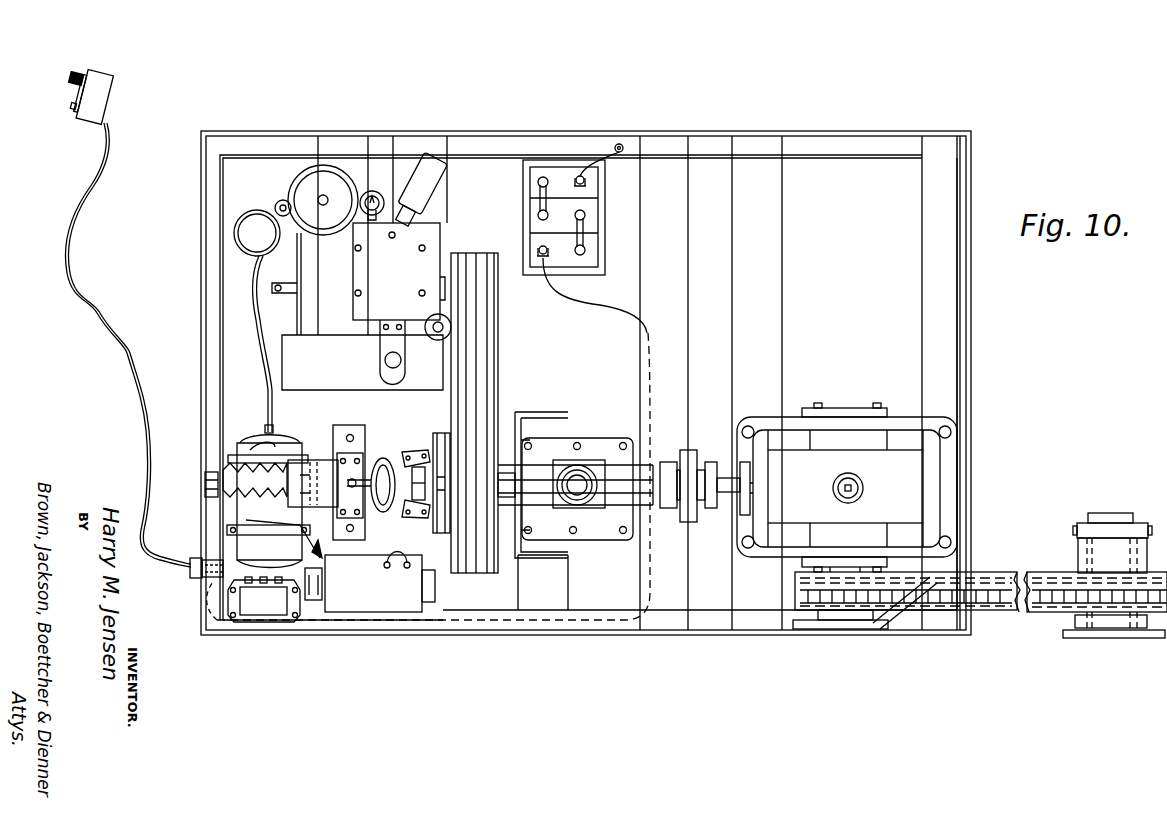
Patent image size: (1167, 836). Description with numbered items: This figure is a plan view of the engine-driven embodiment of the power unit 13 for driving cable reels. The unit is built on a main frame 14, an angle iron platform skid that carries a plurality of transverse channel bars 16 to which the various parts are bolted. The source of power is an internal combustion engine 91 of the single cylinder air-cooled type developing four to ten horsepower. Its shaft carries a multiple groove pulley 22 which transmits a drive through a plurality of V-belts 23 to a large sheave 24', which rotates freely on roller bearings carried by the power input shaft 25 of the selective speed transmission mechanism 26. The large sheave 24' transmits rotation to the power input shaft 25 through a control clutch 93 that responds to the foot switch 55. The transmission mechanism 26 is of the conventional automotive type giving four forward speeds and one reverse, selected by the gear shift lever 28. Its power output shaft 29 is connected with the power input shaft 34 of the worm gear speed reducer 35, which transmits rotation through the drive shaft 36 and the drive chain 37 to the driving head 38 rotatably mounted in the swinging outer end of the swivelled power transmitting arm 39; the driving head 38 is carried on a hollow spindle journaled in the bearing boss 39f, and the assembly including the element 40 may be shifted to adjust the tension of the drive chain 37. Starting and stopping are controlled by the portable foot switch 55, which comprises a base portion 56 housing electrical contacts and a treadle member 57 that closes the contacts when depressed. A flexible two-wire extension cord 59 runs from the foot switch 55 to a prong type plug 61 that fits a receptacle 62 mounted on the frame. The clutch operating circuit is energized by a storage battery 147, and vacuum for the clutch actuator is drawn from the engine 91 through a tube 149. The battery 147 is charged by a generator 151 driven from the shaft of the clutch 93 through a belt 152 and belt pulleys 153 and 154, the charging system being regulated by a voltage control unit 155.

The power unit 13 is at (299, 120).
The main frame 14 is at (500, 143).
The transverse channel bars 16 is at (407, 142).
The multiple groove pulley 22 is at (504, 413).
The V-belts 23 is at (470, 365).
The large sheave 24' is at (500, 466).
The power input shaft 25 is at (502, 468).
The selective speed transmission mechanism 26 is at (575, 478).
The gear shift lever 28 is at (578, 495).
The power output shaft 29 is at (661, 468).
The power input shaft 34 is at (727, 490).
The worm gear speed reducer 35 is at (835, 460).
The drive shaft 36 is at (906, 601).
The drive chain 37 is at (993, 608).
The driving head 38 is at (1095, 638).
The power transmitting arm 39 is at (1032, 573).
The bearing boss 39f is at (1080, 552).
The driving head assembly element 40 is at (1105, 575).
The foot switch 55 is at (97, 79).
The base portion 56 is at (97, 90).
The treadle member 57 is at (75, 98).
The extension cord 59 is at (112, 320).
The plug 61 is at (193, 577).
The receptacle 62 is at (215, 578).
The internal combustion engine 91 is at (307, 187).
The control clutch 93 is at (418, 444).
The storage battery 147 is at (588, 213).
The tube 149 is at (233, 341).
The generator 151 is at (358, 602).
The belt 152 is at (320, 558).
The belt pulley 153 is at (307, 495).
The belt pulley 154 is at (312, 600).
The voltage control unit 155 is at (255, 608).